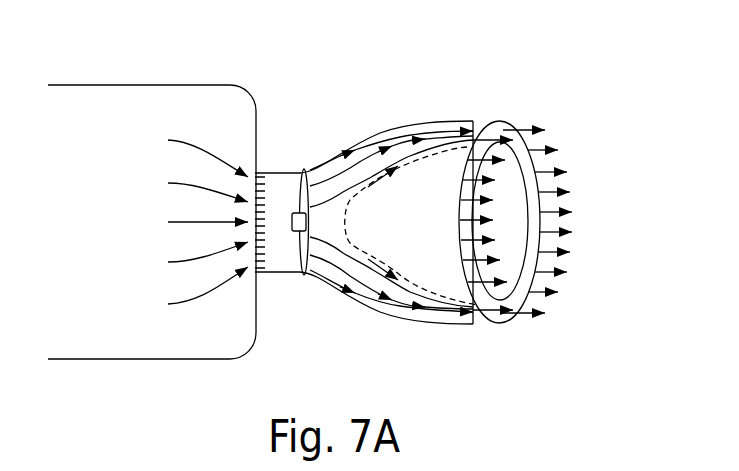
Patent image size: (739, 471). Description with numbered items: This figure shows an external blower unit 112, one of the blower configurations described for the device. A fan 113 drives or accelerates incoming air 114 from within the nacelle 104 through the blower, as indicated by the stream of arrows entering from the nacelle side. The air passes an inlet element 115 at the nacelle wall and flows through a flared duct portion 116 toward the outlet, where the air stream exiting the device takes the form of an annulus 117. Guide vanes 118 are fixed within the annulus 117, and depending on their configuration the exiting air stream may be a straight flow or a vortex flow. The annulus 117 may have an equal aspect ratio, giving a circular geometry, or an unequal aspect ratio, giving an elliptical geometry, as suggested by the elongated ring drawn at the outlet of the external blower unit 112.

The nacelle 104 is at (135, 86).
The external blower unit 112 is at (473, 95).
The fan 113 is at (295, 222).
The incoming air 114 is at (168, 140).
The inlet grille 115 is at (256, 178).
The duct 116 is at (375, 303).
The annulus 117 is at (502, 322).
The guide vanes 118 is at (487, 323).